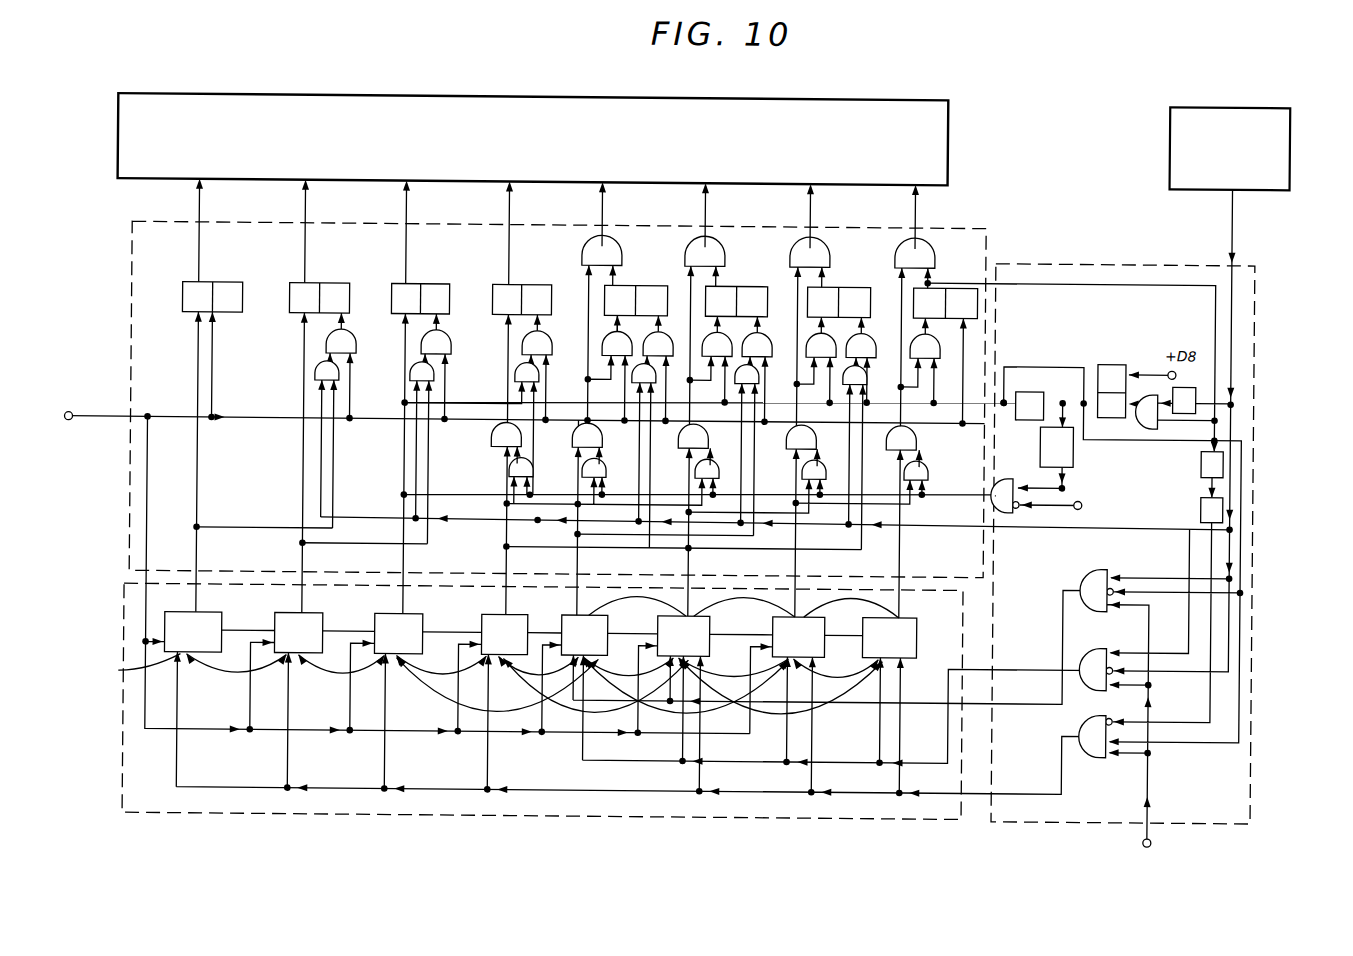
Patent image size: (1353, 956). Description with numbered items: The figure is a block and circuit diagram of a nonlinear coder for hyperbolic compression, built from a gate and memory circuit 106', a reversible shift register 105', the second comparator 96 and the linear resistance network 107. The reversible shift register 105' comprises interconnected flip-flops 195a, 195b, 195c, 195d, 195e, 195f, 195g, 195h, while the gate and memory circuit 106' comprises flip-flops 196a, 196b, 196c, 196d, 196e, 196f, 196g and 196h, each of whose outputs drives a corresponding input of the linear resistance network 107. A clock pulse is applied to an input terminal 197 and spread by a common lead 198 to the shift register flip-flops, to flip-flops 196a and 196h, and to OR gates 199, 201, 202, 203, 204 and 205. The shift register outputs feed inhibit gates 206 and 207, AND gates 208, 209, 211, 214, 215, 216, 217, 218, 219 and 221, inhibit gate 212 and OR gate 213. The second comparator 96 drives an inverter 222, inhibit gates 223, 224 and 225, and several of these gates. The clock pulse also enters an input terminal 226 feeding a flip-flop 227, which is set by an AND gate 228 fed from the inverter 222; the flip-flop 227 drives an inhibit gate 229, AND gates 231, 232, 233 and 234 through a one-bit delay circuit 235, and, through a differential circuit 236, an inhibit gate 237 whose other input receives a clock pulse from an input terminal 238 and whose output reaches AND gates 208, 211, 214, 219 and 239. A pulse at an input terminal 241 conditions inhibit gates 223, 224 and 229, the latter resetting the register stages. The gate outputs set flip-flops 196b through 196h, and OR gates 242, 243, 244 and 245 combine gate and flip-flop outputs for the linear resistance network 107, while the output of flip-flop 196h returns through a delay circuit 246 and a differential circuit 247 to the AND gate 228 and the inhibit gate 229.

The linear resistance network 107 is at (706, 88).
The second comparator 96 is at (1320, 100).
The gate and memory circuit 106' is at (503, 400).
The reversible shift register 105' is at (542, 725).
The flip-flop 196a is at (186, 290).
The flip-flop 196b is at (296, 290).
The flip-flop 196c is at (398, 290).
The flip-flop 196d is at (500, 290).
The flip-flop 196e is at (680, 278).
The flip-flop 196f is at (775, 280).
The flip-flop 196g is at (880, 282).
The flip-flop 196h is at (975, 276).
The flip-flop 195a is at (188, 608).
The flip-flop 195b is at (290, 622).
The flip-flop 195c is at (388, 622).
The flip-flop 195d is at (494, 622).
The flip-flop 195e is at (574, 622).
The flip-flop 195f is at (670, 628).
The flip-flop 195g is at (784, 628).
The flip-flop 195h is at (876, 628).
The input terminal 197 is at (78, 404).
The common lead 198 is at (247, 430).
The OR gate 199 is at (352, 350).
The OR gate 201 is at (460, 344).
The OR gate 202 is at (549, 351).
The OR gate 203 is at (636, 329).
The OR gate 204 is at (845, 380).
The OR gate 205 is at (834, 341).
The inhibit gate 206 is at (314, 376).
The inhibit gate 207 is at (410, 377).
The AND gate 208 is at (510, 471).
The AND gate 209 is at (495, 442).
The AND gate 211 is at (604, 477).
The inhibit gate 212 is at (634, 385).
The OR gate 213 is at (574, 440).
The AND gate 214 is at (697, 472).
The AND gate 215 is at (740, 386).
The AND gate 216 is at (702, 448).
The AND gate 217 is at (868, 356).
The AND gate 218 is at (790, 442).
The AND gate 219 is at (925, 474).
The AND gate 221 is at (916, 442).
The inverter 222 is at (1129, 372).
The inhibit gate 223 is at (1088, 582).
The inhibit gate 224 is at (1090, 652).
The inhibit gate 225 is at (515, 380).
The input terminal 226 is at (1196, 350).
The flip-flop 227 is at (1102, 362).
The AND gate 228 is at (1145, 422).
The inhibit gate 229 is at (1090, 752).
The AND gate 231 is at (935, 343).
The AND gate 232 is at (735, 353).
The AND gate 233 is at (670, 340).
The AND gate 234 is at (603, 351).
The delay circuit 235 is at (1025, 389).
The differential circuit 236 is at (1060, 448).
The inhibit gate 237 is at (1012, 505).
The input terminal 238 is at (1136, 498).
The AND gate 239 is at (804, 472).
The input terminal 241 is at (1145, 838).
The OR gate 242 is at (595, 255).
The OR gate 243 is at (699, 255).
The OR gate 244 is at (803, 255).
The OR gate 245 is at (908, 255).
The delay circuit 246 is at (1224, 462).
The differential circuit 247 is at (1205, 518).